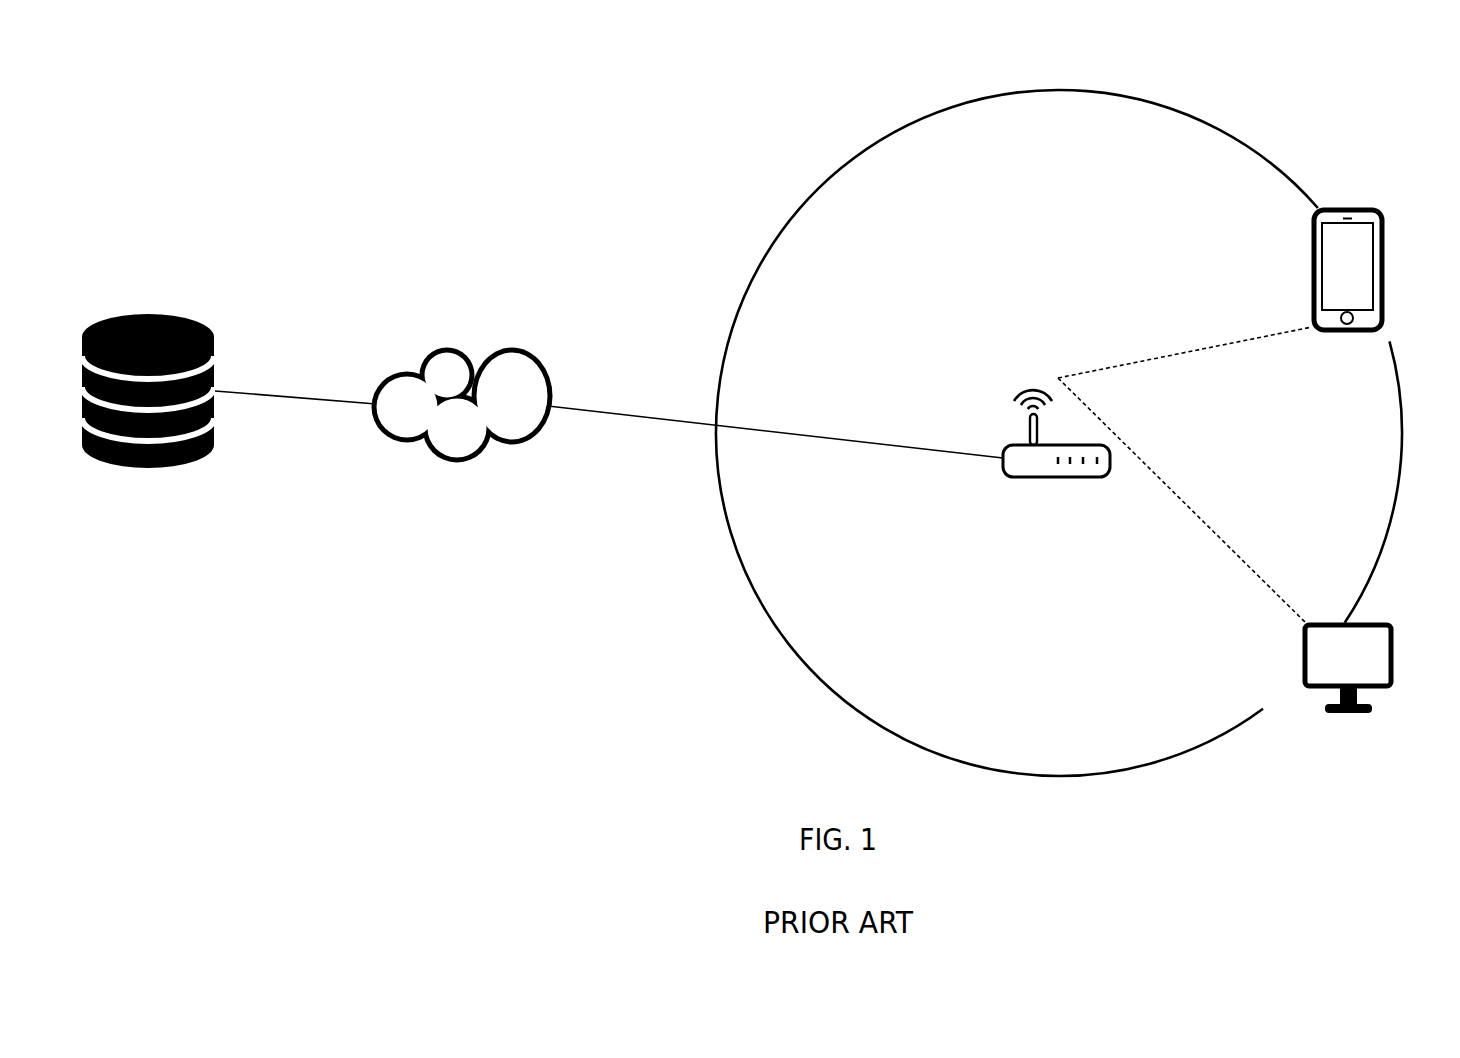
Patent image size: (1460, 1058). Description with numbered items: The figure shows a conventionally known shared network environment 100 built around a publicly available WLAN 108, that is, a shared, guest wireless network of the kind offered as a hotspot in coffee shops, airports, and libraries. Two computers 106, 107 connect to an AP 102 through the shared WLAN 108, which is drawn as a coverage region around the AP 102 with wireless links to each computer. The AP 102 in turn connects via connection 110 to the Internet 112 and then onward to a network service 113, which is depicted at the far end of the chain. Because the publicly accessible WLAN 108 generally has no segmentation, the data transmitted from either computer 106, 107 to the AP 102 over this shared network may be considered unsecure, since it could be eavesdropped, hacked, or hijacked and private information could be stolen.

The network environment 100 is at (1059, 419).
The AP 102 is at (1056, 454).
The computer 106 is at (1379, 270).
The computer 107 is at (1379, 669).
The WLAN 108 is at (1185, 475).
The connection 110 is at (609, 444).
The Internet 112 is at (462, 432).
The network service 113 is at (148, 414).